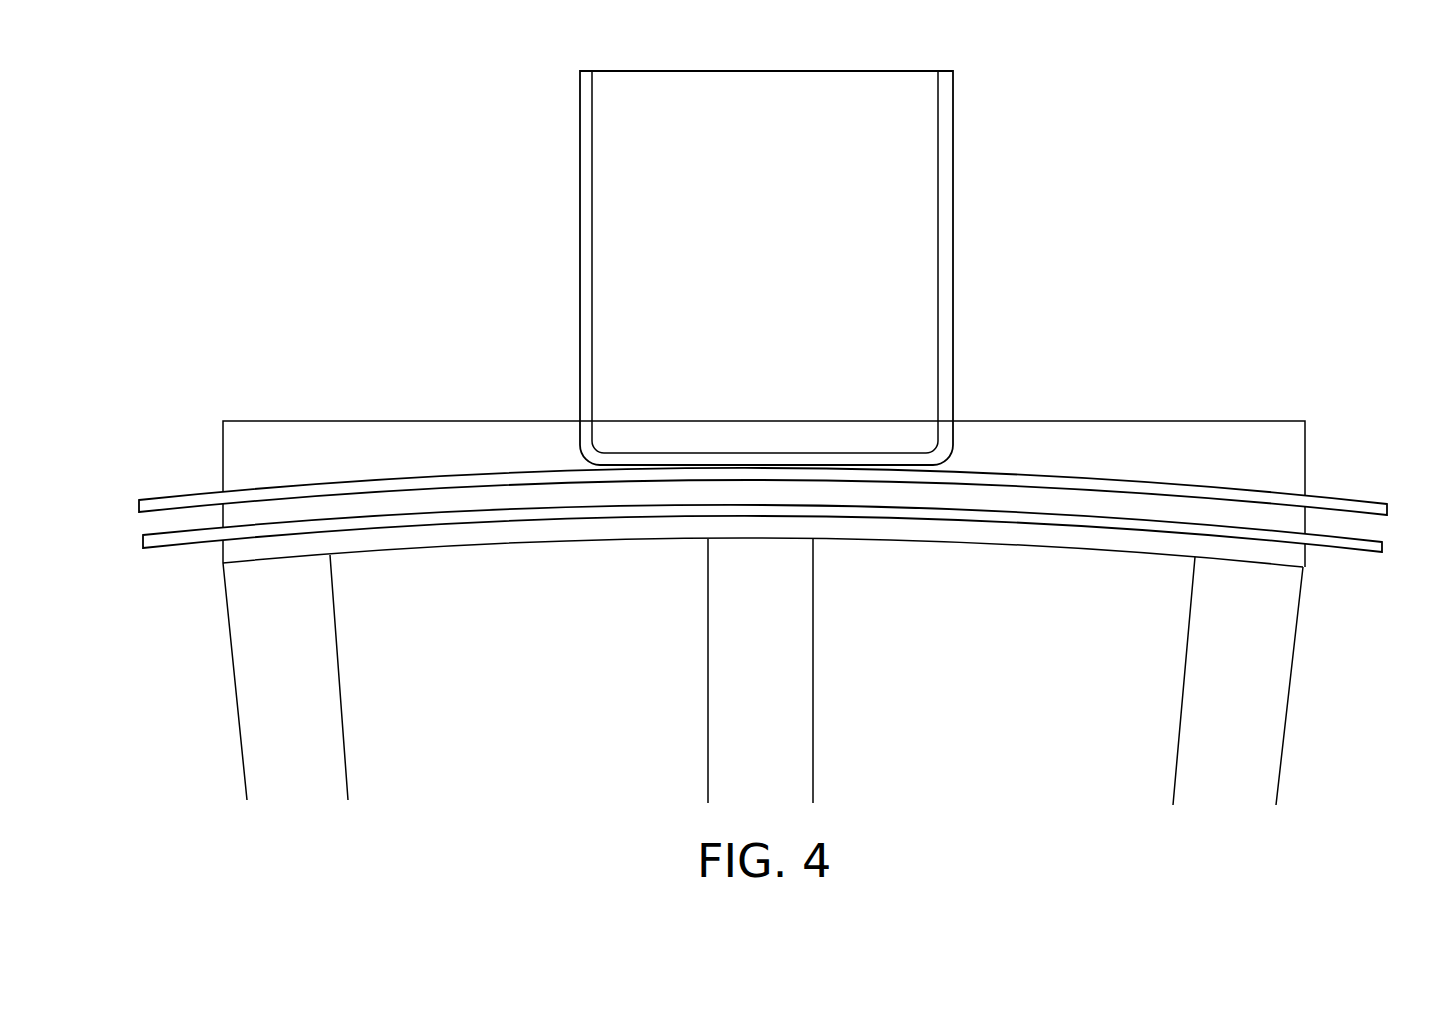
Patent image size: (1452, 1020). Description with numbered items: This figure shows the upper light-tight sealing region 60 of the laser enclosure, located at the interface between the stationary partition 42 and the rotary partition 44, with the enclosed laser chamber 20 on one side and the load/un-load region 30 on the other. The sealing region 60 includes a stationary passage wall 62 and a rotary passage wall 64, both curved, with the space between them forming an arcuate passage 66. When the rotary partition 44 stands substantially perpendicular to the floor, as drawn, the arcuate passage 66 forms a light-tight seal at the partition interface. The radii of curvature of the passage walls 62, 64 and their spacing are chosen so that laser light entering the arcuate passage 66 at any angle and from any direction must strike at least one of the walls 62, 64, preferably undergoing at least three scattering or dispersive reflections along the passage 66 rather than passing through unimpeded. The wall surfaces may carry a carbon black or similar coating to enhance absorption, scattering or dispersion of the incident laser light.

The enclosed laser chamber 20 is at (1366, 745).
The load/un-load region 30 is at (203, 740).
The stationary partition 42 is at (953, 233).
The rotary partition 44 is at (806, 714).
The light-tight sealing region 60 is at (1207, 246).
The stationary passage wall 62 is at (1357, 503).
The rotary passage wall 64 is at (1353, 548).
The arcuate passage 66 is at (1367, 530).